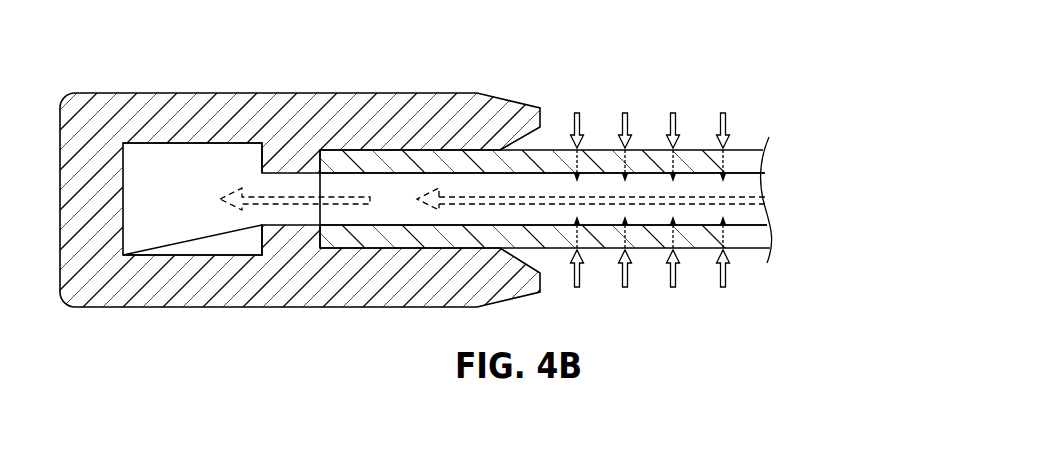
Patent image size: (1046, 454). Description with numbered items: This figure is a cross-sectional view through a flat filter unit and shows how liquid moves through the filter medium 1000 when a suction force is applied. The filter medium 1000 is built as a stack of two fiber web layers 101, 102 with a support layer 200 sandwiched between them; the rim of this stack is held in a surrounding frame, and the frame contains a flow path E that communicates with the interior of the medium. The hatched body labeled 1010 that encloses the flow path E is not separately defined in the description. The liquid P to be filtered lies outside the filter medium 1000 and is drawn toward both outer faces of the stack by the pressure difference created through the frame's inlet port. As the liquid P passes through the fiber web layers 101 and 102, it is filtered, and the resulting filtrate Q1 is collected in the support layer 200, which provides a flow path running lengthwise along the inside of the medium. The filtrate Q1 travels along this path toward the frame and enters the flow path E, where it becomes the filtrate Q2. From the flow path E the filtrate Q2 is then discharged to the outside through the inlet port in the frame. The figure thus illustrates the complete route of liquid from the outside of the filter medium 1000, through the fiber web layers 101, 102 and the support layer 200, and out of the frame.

The heat dissipation block / housing 1010 is at (288, 113).
The flow path E is at (157, 162).
The fiber web layer 101 is at (752, 155).
The fiber web layer 102 is at (752, 230).
The support layer 200 is at (763, 200).
The filter medium 1000 is at (536, 200).
The liquid to be filtered P is at (650, 198).
The filtrate Q1 is at (573, 200).
The filtrate Q2 is at (274, 200).